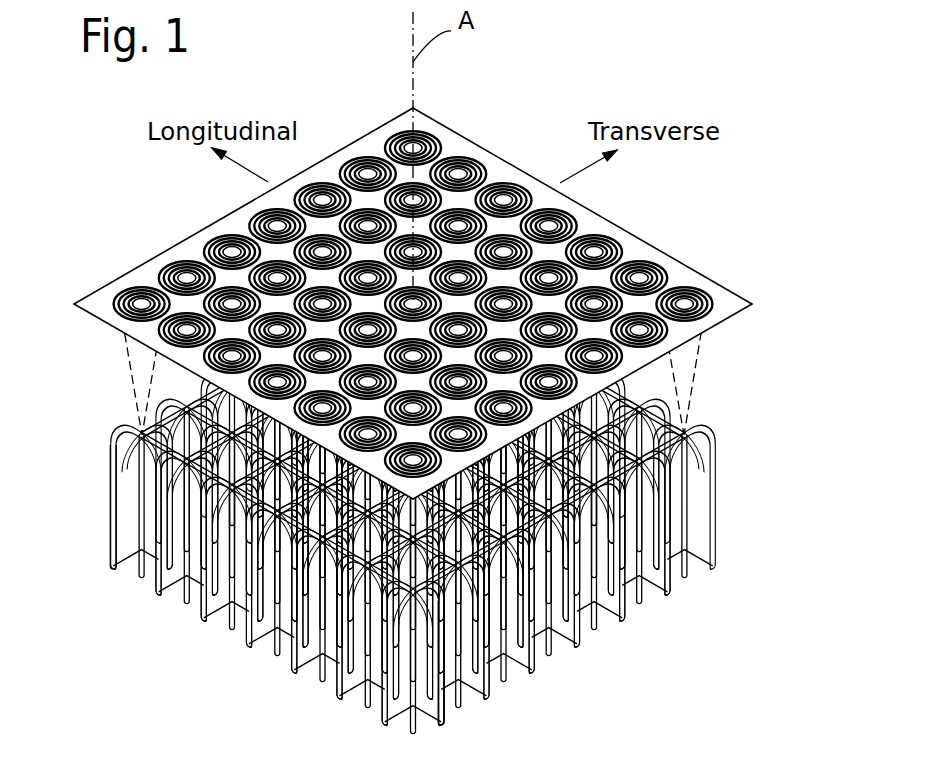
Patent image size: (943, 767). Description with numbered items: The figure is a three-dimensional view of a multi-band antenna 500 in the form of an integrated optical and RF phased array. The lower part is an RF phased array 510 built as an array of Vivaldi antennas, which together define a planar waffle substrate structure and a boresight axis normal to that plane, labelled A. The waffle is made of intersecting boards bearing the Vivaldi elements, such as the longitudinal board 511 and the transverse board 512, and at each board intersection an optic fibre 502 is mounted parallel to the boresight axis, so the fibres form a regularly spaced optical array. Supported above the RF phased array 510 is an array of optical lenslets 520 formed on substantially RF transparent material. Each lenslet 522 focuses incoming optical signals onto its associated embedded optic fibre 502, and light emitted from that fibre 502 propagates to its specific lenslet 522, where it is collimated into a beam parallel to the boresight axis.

The multi-band antenna 500 is at (775, 207).
The RF phased array 510 is at (750, 475).
The array of optical lenslets 520 is at (503, 170).
The lenslet 522 is at (132, 292).
The optic fibre 502 is at (113, 468).
The transverse board 512 is at (123, 543).
The longitudinal board 511 is at (430, 702).